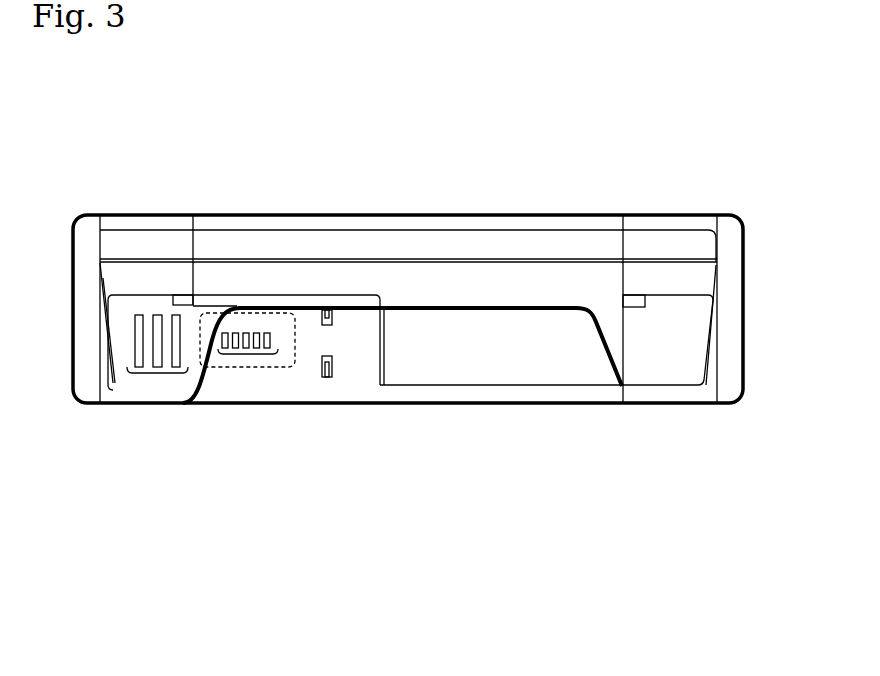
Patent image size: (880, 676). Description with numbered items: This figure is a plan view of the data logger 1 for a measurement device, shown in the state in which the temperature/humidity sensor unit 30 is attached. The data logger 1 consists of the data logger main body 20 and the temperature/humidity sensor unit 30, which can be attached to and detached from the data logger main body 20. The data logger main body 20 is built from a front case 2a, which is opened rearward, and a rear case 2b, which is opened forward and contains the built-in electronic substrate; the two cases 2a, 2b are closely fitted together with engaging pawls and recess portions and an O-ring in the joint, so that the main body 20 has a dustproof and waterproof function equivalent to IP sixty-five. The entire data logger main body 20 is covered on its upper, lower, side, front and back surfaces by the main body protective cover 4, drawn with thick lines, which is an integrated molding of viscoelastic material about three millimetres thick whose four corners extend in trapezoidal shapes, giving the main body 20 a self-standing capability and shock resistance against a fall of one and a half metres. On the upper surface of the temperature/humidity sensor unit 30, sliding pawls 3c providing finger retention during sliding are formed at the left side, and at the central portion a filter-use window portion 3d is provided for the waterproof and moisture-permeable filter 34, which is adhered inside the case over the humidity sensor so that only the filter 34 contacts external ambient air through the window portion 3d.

The data logger 1 is at (578, 159).
The front case 2a is at (712, 245).
The rear case 2b is at (707, 280).
The main body protective cover 4 is at (743, 367).
The data logger main body 20 is at (568, 390).
The temperature/humidity sensor unit 30 is at (316, 396).
The sliding pawls 3c is at (157, 373).
The filter-use window portion 3d is at (247, 354).
The waterproof and moisture-permeable filter 34 is at (283, 368).